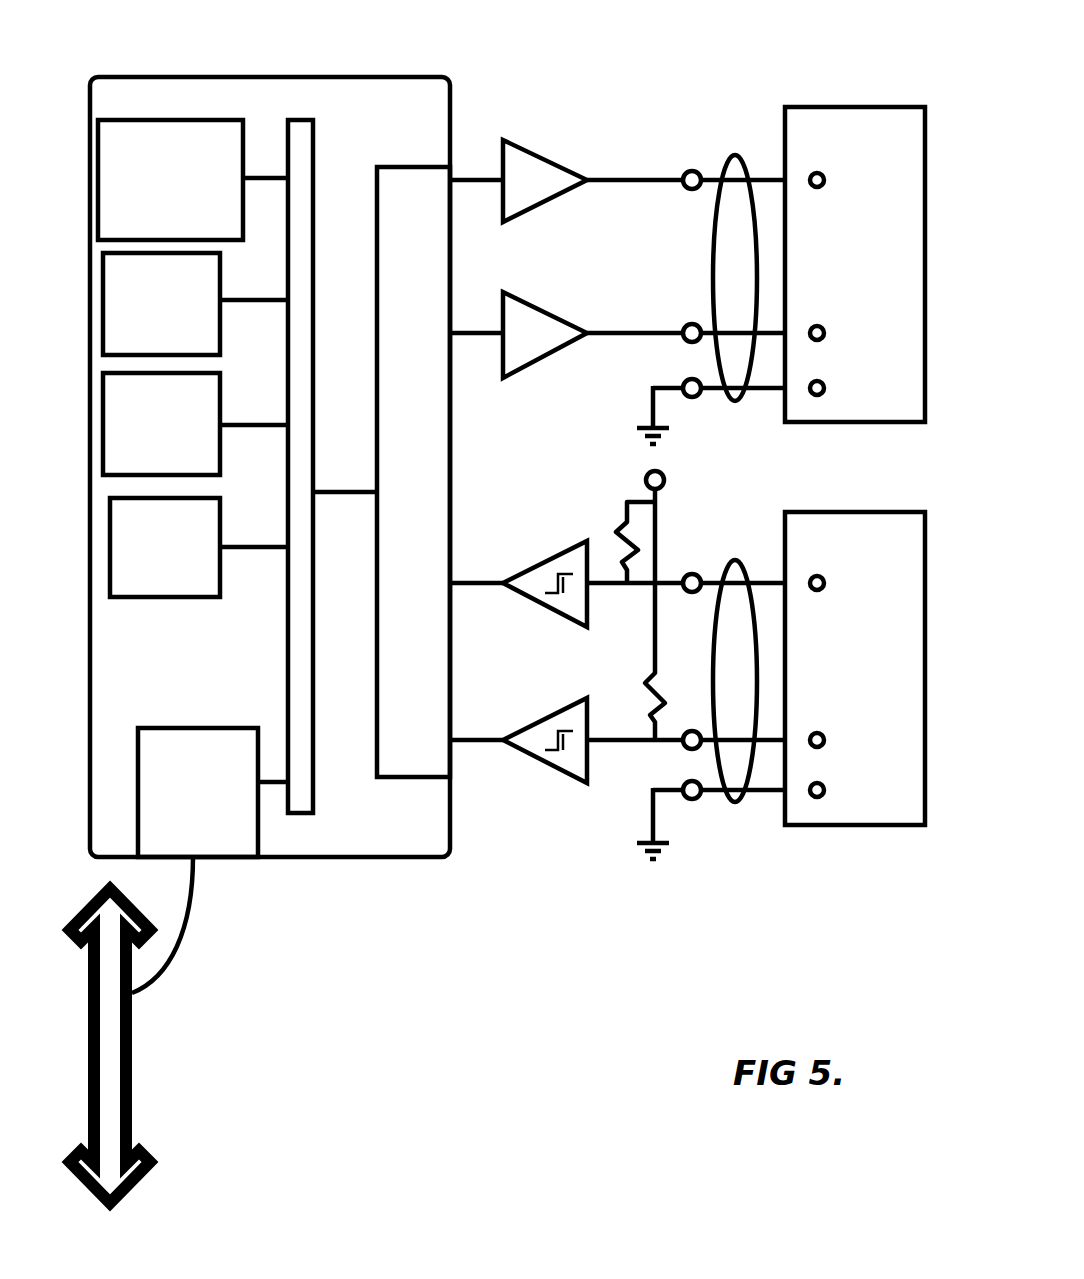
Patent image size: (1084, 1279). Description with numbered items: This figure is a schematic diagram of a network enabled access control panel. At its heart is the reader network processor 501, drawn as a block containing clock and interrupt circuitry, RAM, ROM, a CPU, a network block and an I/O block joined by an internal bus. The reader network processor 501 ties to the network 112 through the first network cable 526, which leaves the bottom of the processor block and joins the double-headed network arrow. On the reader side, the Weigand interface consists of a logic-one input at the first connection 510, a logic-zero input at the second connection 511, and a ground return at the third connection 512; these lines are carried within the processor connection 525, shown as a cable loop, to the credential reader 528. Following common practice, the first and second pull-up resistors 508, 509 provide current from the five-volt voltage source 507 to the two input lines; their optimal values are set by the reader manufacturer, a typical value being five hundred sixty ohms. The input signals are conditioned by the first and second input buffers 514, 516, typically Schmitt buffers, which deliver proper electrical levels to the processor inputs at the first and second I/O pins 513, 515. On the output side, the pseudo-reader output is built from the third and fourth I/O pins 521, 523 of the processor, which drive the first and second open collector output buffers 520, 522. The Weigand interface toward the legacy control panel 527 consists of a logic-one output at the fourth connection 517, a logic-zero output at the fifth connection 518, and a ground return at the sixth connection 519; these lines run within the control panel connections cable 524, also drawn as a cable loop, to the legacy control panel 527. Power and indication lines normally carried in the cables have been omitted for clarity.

The reader network processor 501 is at (262, 62).
The first network cable 526 is at (197, 880).
The network 112 is at (132, 1093).
The fourth I/O pin 523 is at (478, 180).
The second output buffer 522 is at (543, 202).
The third I/O pin 521 is at (478, 333).
The first output buffer 520 is at (533, 372).
The fourth connection 517 is at (692, 170).
The fifth connection 518 is at (690, 344).
The sixth connection 519 is at (694, 398).
The control panel connections cable 524 is at (757, 152).
The legacy control panel 527 is at (820, 424).
The voltage source 507 is at (655, 471).
The first pull-up resistor 508 is at (616, 532).
The second pull-up resistor 509 is at (645, 690).
The first connection 510 is at (692, 573).
The second connection 511 is at (692, 750).
The third connection 512 is at (694, 800).
The processor connection 525 is at (757, 557).
The credential reader 528 is at (820, 827).
The first I/O pin 513 is at (487, 573).
The first input buffer 514 is at (561, 613).
The second I/O pin 515 is at (491, 728).
The second input buffer 516 is at (561, 780).